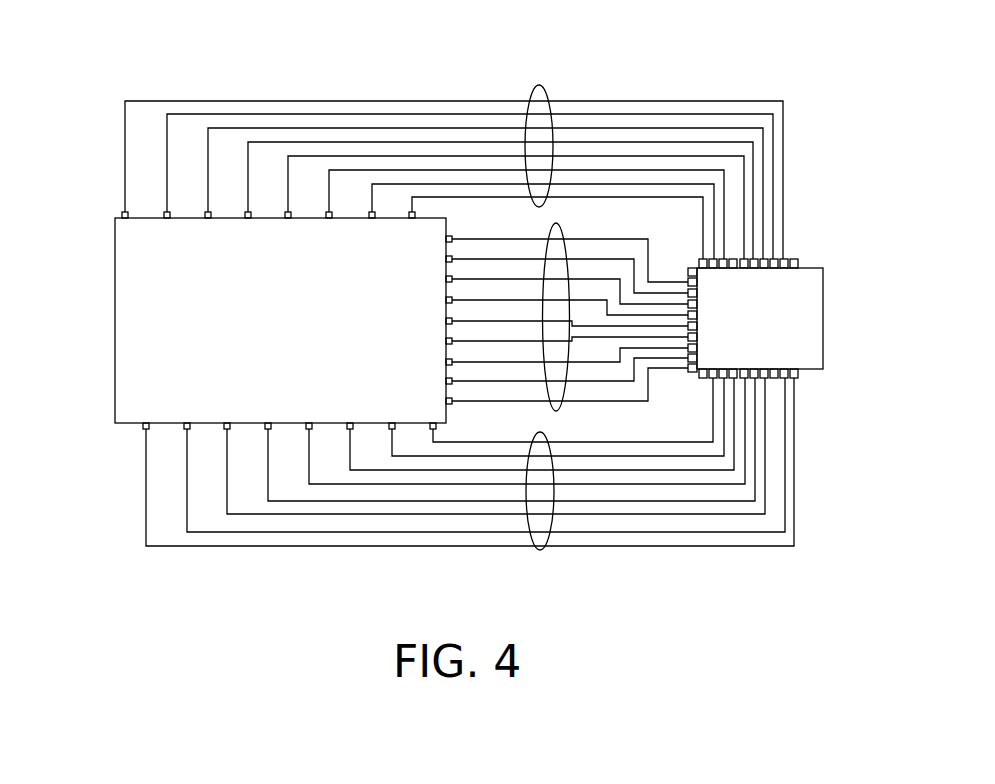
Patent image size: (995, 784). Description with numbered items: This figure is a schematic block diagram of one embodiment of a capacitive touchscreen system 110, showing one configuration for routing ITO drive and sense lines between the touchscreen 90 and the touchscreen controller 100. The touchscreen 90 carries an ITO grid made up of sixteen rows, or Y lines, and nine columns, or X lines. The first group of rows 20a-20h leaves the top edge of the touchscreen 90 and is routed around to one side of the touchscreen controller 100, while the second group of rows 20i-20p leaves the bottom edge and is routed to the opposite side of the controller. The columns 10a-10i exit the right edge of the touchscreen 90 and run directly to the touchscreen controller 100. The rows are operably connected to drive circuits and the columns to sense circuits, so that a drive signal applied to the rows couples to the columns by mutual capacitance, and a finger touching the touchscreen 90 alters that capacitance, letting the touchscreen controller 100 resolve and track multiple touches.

The touchscreen system 110 is at (97, 72).
The touchscreen 90 is at (140, 302).
The touchscreen controller 100 is at (823, 318).
The rows 20a-20h is at (531, 85).
The columns 10a-10i is at (556, 224).
The rows 20i-20p is at (540, 550).